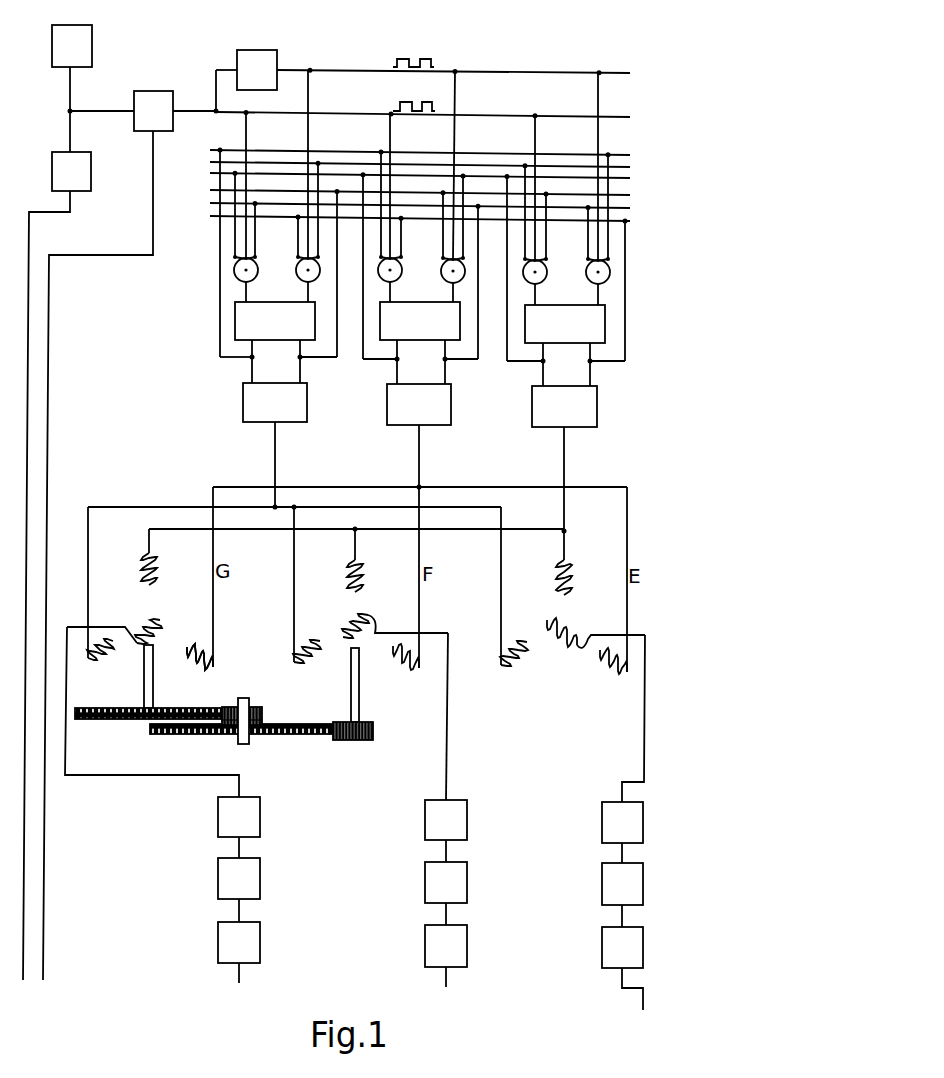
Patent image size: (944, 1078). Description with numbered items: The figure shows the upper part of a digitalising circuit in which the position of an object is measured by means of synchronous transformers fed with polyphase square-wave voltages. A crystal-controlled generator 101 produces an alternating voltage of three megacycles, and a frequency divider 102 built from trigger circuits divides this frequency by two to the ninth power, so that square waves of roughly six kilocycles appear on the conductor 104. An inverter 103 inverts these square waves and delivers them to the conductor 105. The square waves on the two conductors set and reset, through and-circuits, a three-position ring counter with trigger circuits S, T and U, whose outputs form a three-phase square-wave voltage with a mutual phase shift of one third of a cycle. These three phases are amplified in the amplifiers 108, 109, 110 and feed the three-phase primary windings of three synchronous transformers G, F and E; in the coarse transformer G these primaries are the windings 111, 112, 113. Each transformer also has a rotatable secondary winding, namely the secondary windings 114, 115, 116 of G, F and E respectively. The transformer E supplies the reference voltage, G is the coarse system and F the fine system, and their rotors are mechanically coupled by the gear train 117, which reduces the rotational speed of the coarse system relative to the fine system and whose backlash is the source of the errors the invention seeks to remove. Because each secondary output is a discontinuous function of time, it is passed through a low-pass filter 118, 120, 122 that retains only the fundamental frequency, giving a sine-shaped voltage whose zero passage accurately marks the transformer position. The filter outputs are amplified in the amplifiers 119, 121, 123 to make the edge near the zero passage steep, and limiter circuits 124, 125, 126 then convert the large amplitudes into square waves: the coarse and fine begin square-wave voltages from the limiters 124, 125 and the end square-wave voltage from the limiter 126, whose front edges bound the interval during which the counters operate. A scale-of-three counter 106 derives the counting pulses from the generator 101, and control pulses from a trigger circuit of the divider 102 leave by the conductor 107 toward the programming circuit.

The crystal-controlled generator 101 is at (93, 88).
The frequency divider 102 is at (185, 100).
The inverter 103 is at (257, 70).
The conductor 104 is at (423, 177).
The conductor 105 is at (453, 156).
The scale-of-three counter 106 is at (74, 566).
The conductor 107 is at (98, 555).
The amplifier 108 is at (279, 327).
The amplifier 109 is at (421, 319).
The amplifier 110 is at (566, 356).
The primary winding 111 is at (133, 557).
The primary winding 112 is at (103, 661).
The primary winding 113 is at (193, 664).
The secondary winding 114 is at (133, 660).
The secondary winding 115 is at (395, 660).
The secondary winding 116 is at (596, 624).
The gear train 117 is at (224, 727).
The low-pass filter 118 is at (162, 742).
The amplifier 119 is at (239, 890).
The low-pass filter 120 is at (446, 747).
The amplifier 121 is at (446, 893).
The low-pass filter 122 is at (623, 749).
The amplifier 123 is at (622, 895).
The limiter circuit 124 is at (239, 952).
The limiter circuit 125 is at (446, 956).
The limiter circuit 126 is at (622, 968).